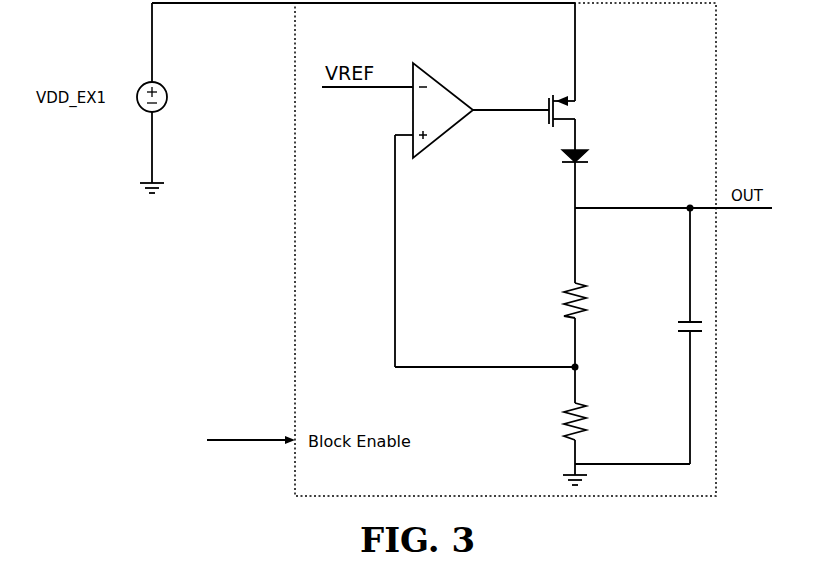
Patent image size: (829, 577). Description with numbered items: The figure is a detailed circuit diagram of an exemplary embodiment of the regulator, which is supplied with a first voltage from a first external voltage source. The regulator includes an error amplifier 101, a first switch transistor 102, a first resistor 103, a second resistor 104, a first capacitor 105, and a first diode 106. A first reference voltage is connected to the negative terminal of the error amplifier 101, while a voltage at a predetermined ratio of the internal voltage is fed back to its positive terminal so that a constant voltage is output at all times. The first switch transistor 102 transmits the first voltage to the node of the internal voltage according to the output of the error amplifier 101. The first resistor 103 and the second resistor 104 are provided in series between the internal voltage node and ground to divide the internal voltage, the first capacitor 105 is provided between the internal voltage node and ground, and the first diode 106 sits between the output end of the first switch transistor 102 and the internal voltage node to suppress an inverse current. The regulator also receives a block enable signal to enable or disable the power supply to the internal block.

The error amplifier 101 is at (430, 74).
The first switch transistor M1 102 is at (585, 98).
The first resistor R1 103 is at (585, 279).
The second resistor R2 104 is at (585, 399).
The first capacitor CL1 105 is at (694, 318).
The first diode D4 106 is at (628, 147).